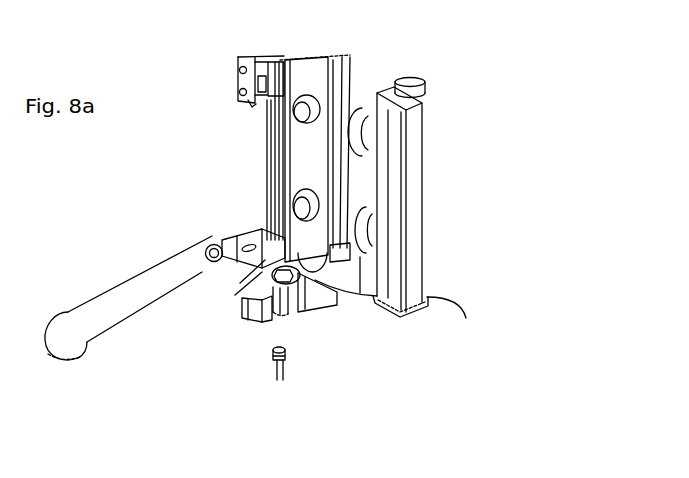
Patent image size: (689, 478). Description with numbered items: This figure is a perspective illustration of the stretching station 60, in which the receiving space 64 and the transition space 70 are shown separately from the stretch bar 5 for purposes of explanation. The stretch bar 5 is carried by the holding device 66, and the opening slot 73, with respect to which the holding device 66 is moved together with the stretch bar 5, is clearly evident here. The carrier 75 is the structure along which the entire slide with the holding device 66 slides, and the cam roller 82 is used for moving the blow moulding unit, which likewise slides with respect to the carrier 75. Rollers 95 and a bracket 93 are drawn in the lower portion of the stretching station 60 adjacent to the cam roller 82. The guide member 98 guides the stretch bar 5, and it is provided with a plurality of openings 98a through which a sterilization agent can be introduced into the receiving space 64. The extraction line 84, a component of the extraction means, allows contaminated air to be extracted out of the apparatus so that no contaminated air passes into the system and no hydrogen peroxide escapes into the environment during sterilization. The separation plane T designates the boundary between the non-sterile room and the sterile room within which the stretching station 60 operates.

The tool holder assembly 60 is at (480, 245).
The holding device 66 is at (263, 92).
The stretch bar 5 is at (276, 136).
The carrier 75 is at (265, 165).
The cam roller 82 is at (220, 240).
The roller 95 is at (212, 261).
The bracket 93 is at (247, 239).
The guide member 98 is at (287, 283).
The openings 98a is at (267, 259).
The extraction line 84 is at (366, 112).
The transition space 70 is at (410, 141).
The opening slot 73 is at (390, 177).
The receiving space 64 is at (425, 93).
The separation plane T is at (395, 315).